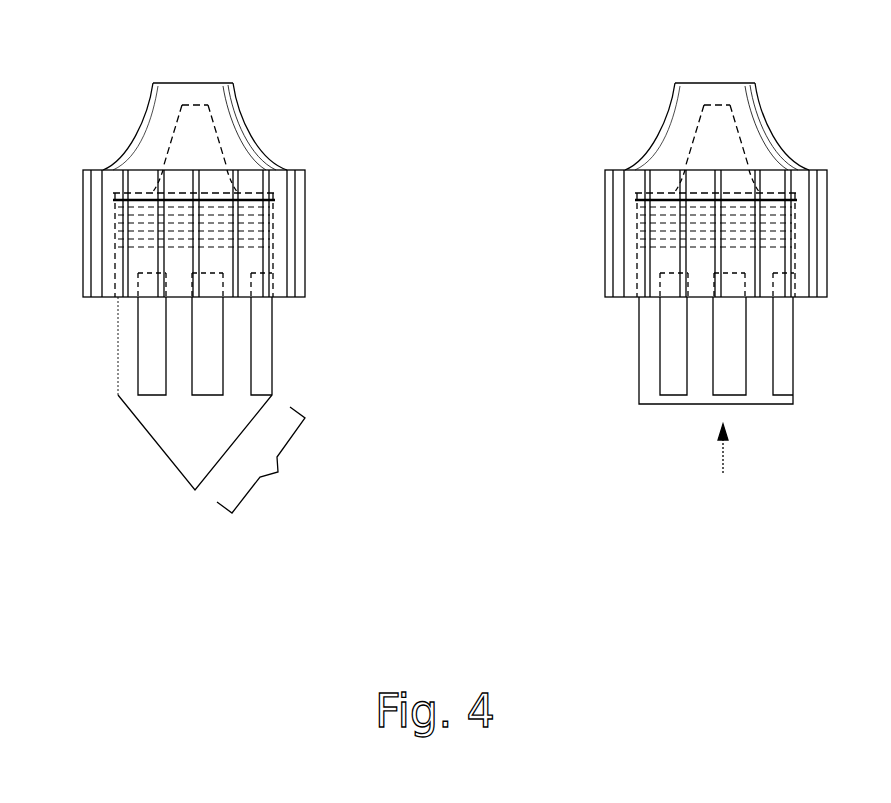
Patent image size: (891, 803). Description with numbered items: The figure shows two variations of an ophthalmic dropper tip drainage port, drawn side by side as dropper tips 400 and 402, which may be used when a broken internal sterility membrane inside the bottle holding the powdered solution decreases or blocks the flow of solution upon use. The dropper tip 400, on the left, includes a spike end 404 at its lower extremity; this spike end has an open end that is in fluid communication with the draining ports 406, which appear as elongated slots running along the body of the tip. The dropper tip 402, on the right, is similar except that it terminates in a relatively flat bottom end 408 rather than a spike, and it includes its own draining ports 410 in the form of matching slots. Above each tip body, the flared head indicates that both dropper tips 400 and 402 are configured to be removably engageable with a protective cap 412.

The ophthalmic dropper tip 400 is at (208, 268).
The ophthalmic dropper tip 402 is at (747, 268).
The spike end 404 is at (143, 430).
The draining ports 406 is at (275, 352).
The flat bottom end 408 is at (768, 405).
The draining ports 410 is at (795, 368).
The protective cap 412 is at (250, 127).